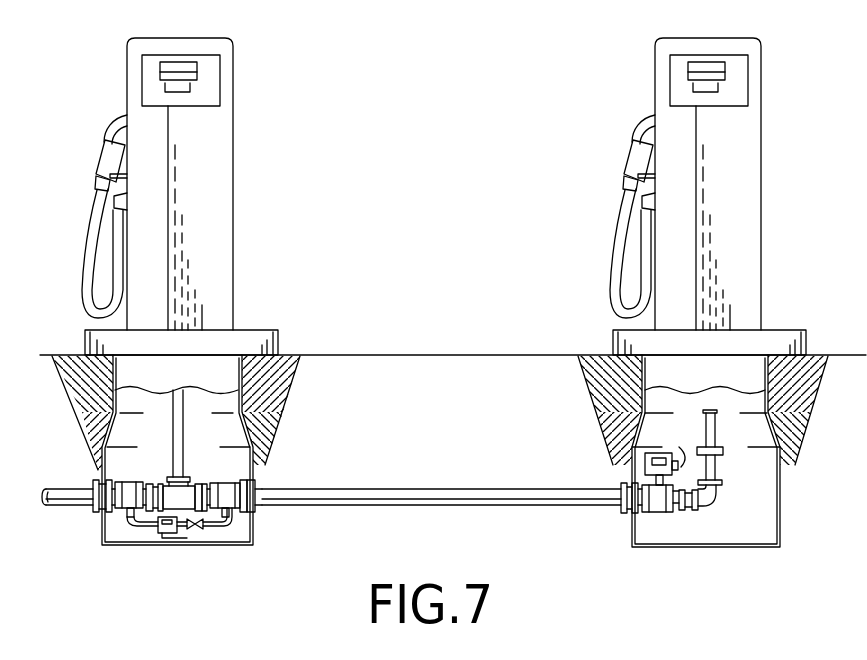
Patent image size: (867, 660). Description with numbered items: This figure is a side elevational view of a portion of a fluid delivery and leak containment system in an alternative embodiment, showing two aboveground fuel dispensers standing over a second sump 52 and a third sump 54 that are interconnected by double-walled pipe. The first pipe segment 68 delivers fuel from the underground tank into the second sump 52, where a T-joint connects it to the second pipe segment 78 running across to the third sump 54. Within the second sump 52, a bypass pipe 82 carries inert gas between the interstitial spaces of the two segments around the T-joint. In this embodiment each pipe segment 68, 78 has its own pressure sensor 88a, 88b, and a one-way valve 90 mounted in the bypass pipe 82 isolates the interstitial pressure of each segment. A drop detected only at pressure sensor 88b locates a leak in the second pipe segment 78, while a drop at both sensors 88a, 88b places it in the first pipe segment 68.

The second sump 52 is at (252, 420).
The third sump 54 is at (773, 423).
The first pipe segment 68 is at (58, 503).
The second pipe segment 78 is at (470, 500).
The bypass pipe 82 is at (142, 528).
The pressure sensor 88a is at (161, 535).
The pressure sensor 88b is at (650, 470).
The one-way valve 90 is at (193, 533).